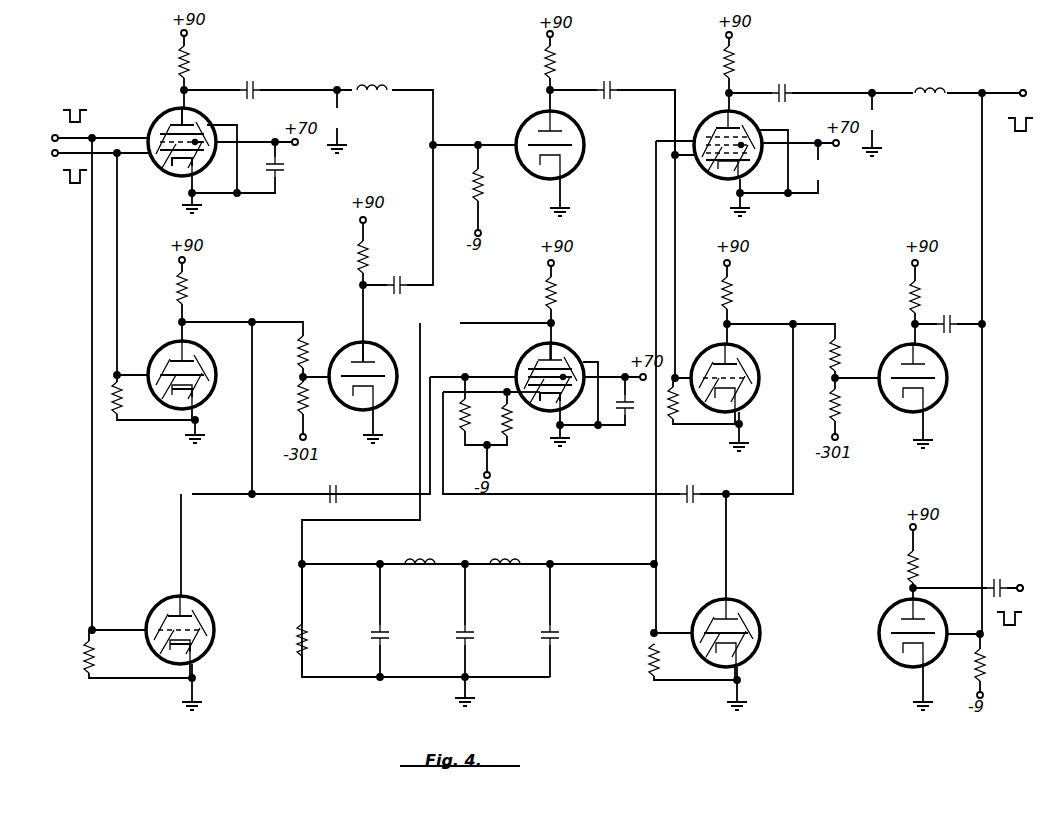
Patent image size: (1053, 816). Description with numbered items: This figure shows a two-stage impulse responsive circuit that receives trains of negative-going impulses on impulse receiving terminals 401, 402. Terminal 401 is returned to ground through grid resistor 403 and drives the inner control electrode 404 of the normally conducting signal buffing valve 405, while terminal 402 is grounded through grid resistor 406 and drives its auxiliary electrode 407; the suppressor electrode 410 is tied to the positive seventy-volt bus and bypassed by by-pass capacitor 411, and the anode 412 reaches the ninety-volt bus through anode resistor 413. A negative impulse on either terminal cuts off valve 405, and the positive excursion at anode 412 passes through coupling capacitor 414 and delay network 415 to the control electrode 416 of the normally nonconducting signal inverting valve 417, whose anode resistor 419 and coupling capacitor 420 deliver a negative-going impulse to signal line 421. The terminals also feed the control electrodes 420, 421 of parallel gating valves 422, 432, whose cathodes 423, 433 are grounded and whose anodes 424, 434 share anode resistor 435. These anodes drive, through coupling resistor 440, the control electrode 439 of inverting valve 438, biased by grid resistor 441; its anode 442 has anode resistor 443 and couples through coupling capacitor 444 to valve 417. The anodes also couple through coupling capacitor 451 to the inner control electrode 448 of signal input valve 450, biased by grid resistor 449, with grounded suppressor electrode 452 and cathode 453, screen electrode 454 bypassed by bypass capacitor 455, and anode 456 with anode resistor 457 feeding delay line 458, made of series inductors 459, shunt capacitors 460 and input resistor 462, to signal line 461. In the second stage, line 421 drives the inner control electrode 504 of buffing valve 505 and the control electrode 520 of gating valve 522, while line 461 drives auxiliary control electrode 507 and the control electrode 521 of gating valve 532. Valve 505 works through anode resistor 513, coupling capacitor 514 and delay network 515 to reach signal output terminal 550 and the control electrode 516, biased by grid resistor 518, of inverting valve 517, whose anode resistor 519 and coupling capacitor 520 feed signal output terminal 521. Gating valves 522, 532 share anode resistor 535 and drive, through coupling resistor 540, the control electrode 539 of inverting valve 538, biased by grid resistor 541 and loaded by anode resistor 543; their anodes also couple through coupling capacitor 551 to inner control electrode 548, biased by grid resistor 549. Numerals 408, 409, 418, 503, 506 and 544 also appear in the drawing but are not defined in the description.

The impulse receiving terminal 401 is at (55, 153).
The impulse receiving terminal 402 is at (55, 137).
The grid resistor 403 is at (117, 416).
The inner control electrode 404 is at (168, 160).
The signal buffing valve 405 is at (172, 110).
The grid resistor 406 is at (95, 660).
The auxiliary electrode 407 is at (168, 134).
The grid 408 is at (172, 122).
The cathode 409 is at (180, 170).
The suppressor electrode 410 is at (206, 140).
The by-pass capacitor 411 is at (284, 168).
The anode 412 is at (194, 118).
The anode resistor 413 is at (190, 62).
The coupling capacitor 414 is at (262, 78).
The delay network 415 is at (395, 81).
The control electrode 416 is at (568, 148).
The signal inverting valve 417 is at (522, 126).
The resistor 418 is at (484, 190).
The anode resistor 419 is at (556, 68).
The coupling capacitor 420 is at (608, 88).
The signal line 421 is at (645, 90).
The gating valve 422 is at (162, 346).
The cathode 423 is at (168, 396).
The anode 424 is at (190, 358).
The gating valve 432 is at (158, 600).
The cathode 433 is at (198, 642).
The anode 434 is at (195, 612).
The anode resistor 435 is at (190, 292).
The signal inverting valve 438 is at (340, 345).
The control electrode 439 is at (350, 380).
The coupling resistor 440 is at (298, 352).
The grid resistor 441 is at (298, 404).
The anode 442 is at (366, 352).
The anode resistor 443 is at (358, 262).
The coupling capacitor 444 is at (398, 280).
The inner control electrode 448 is at (530, 360).
The grid resistor 449 is at (470, 420).
The signal input valve 450 is at (554, 345).
The coupling capacitor 451 is at (340, 492).
The suppressor electrode 452 is at (574, 372).
The cathode 453 is at (546, 405).
The screen electrode 454 is at (576, 382).
The bypass capacitor 455 is at (630, 415).
The anode 456 is at (568, 360).
The anode resistor 457 is at (545, 300).
The delay line 458 is at (485, 548).
The inductors 459 is at (425, 568).
The capacitors 460 is at (546, 635).
The signal line 461 is at (620, 566).
The input resistor 462 is at (385, 619).
The resistor 503 is at (673, 420).
The inner control electrode 504 is at (712, 168).
The signal buffing valve 505 is at (742, 130).
The resistor 506 is at (650, 658).
The auxiliary control electrode 507 is at (708, 122).
The anode resistor 513 is at (735, 64).
The coupling capacitor 514 is at (786, 90).
The delay network 515 is at (946, 81).
The control electrode 516 is at (895, 636).
The signal inverting valve 517 is at (890, 610).
The grid resistor 518 is at (985, 666).
The anode resistor 519 is at (920, 570).
The coupling capacitor 520 is at (740, 362).
The signal output terminal 521 is at (710, 630).
The signal gating valve 522 is at (703, 350).
The signal gating valve 532 is at (736, 608).
The anode resistor 535 is at (735, 294).
The signal inverting valve 538 is at (902, 345).
The control electrode 539 is at (892, 376).
The coupling resistor 540 is at (830, 360).
The grid resistor 541 is at (841, 412).
The anode resistor 543 is at (921, 300).
The capacitor 544 is at (948, 330).
The inner control electrode 548 is at (522, 388).
The grid resistor 549 is at (512, 440).
The signal output terminal 550 is at (1028, 84).
The coupling capacitor 551 is at (693, 492).